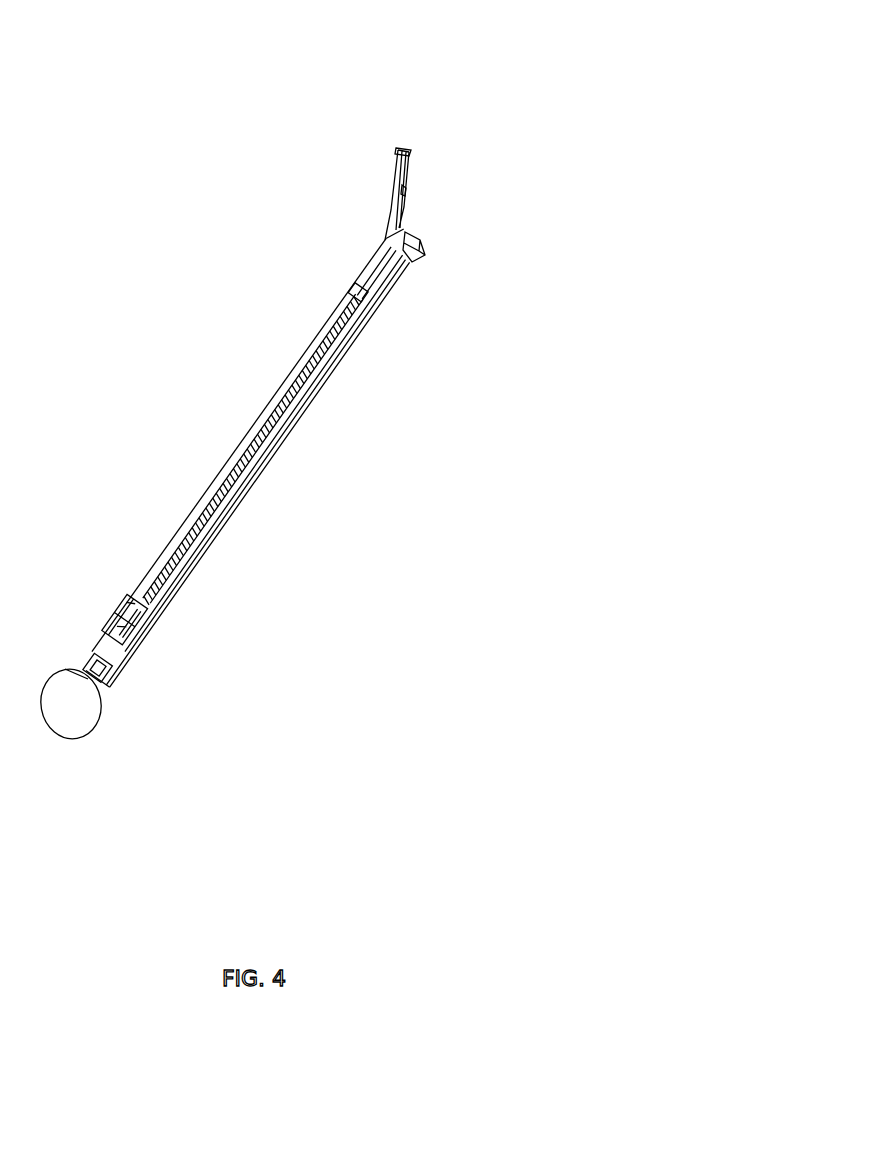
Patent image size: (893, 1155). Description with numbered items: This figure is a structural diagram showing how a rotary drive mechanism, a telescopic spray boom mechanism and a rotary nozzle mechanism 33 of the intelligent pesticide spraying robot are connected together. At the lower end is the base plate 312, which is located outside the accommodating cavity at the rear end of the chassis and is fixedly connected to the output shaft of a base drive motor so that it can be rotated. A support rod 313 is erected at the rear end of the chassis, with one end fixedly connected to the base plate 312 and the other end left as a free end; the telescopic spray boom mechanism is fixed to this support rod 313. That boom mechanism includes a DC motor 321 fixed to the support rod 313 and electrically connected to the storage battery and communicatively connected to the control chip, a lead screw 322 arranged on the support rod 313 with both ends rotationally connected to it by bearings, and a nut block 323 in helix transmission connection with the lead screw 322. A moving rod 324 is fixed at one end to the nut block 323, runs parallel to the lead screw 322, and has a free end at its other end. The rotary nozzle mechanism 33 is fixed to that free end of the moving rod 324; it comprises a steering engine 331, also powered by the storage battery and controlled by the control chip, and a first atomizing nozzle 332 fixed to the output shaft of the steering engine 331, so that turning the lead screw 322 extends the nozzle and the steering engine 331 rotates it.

The rotary nozzle mechanism 33 is at (469, 140).
The steering engine 331 is at (421, 236).
The first atomizing nozzle 332 is at (400, 157).
The moving rod 324 is at (352, 287).
The lead screw 322 is at (173, 563).
The nut block 323 is at (140, 610).
The DC motor 321 is at (100, 655).
The support rod 313 is at (120, 667).
The base plate 312 is at (90, 712).